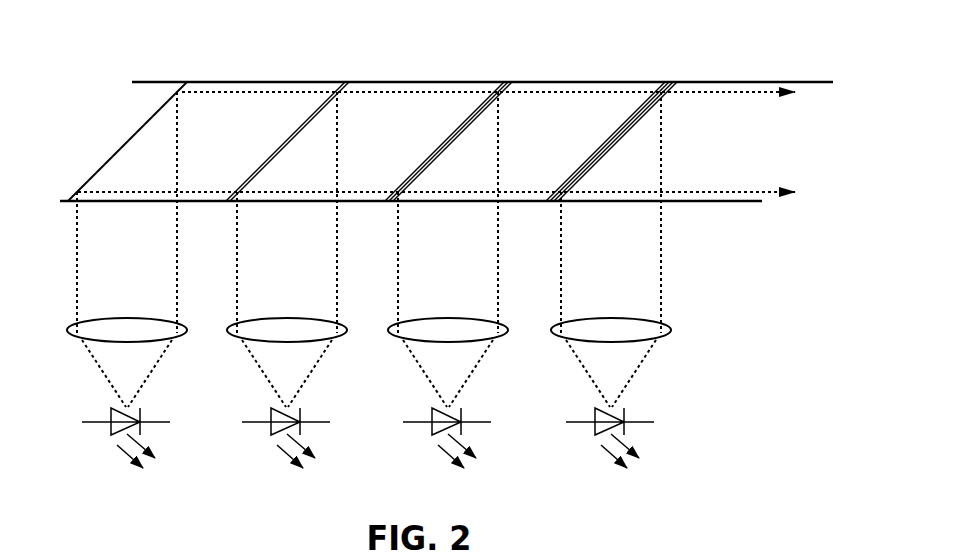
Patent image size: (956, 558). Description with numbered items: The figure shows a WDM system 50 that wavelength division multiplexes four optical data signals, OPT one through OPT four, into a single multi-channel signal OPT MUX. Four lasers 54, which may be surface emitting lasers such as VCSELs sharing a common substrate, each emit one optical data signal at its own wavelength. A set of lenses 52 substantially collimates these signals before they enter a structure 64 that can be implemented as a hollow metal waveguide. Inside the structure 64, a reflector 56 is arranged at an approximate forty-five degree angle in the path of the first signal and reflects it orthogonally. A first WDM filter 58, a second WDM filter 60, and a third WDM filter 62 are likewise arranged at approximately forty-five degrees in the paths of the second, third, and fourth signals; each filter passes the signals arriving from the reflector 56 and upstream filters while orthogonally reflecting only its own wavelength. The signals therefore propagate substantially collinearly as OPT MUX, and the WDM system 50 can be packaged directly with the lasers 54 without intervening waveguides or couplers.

The WDM system 50 is at (125, 42).
The lenses 52 is at (167, 319).
The lasers 54 is at (120, 435).
The reflector 56 is at (148, 120).
The first WDM filter 58 is at (288, 137).
The second WDM filter 60 is at (440, 140).
The third WDM filter 62 is at (607, 135).
The structure 64 is at (625, 83).